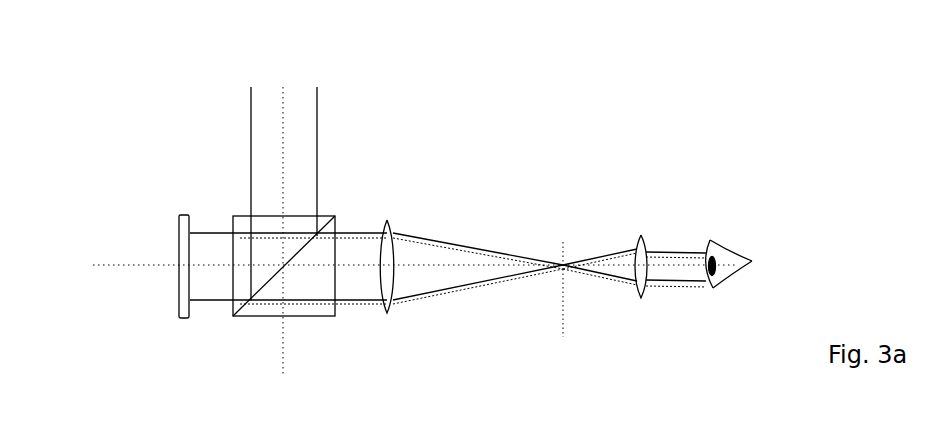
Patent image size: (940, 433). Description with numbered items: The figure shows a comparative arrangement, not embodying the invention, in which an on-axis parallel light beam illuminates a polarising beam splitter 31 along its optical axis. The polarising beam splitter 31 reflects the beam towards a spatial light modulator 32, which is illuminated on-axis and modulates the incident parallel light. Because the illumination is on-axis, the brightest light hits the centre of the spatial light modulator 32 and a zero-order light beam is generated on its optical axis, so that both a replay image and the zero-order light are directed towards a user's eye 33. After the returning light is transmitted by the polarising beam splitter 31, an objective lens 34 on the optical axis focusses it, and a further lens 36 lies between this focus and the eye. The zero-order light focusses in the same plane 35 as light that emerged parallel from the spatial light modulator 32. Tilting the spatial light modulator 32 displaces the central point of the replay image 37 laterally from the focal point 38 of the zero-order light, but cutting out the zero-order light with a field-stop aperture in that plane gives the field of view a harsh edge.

The polarising beam splitter 31 is at (335, 217).
The spatial light modulator 32 is at (177, 260).
The user's eye 33 is at (740, 251).
The objective lens 34 is at (395, 302).
The plane 35 is at (566, 320).
The second lens (eyepiece) 36 is at (643, 233).
The central point of the replay image 37 is at (563, 267).
The focal point of the zero-order light 38 is at (561, 262).